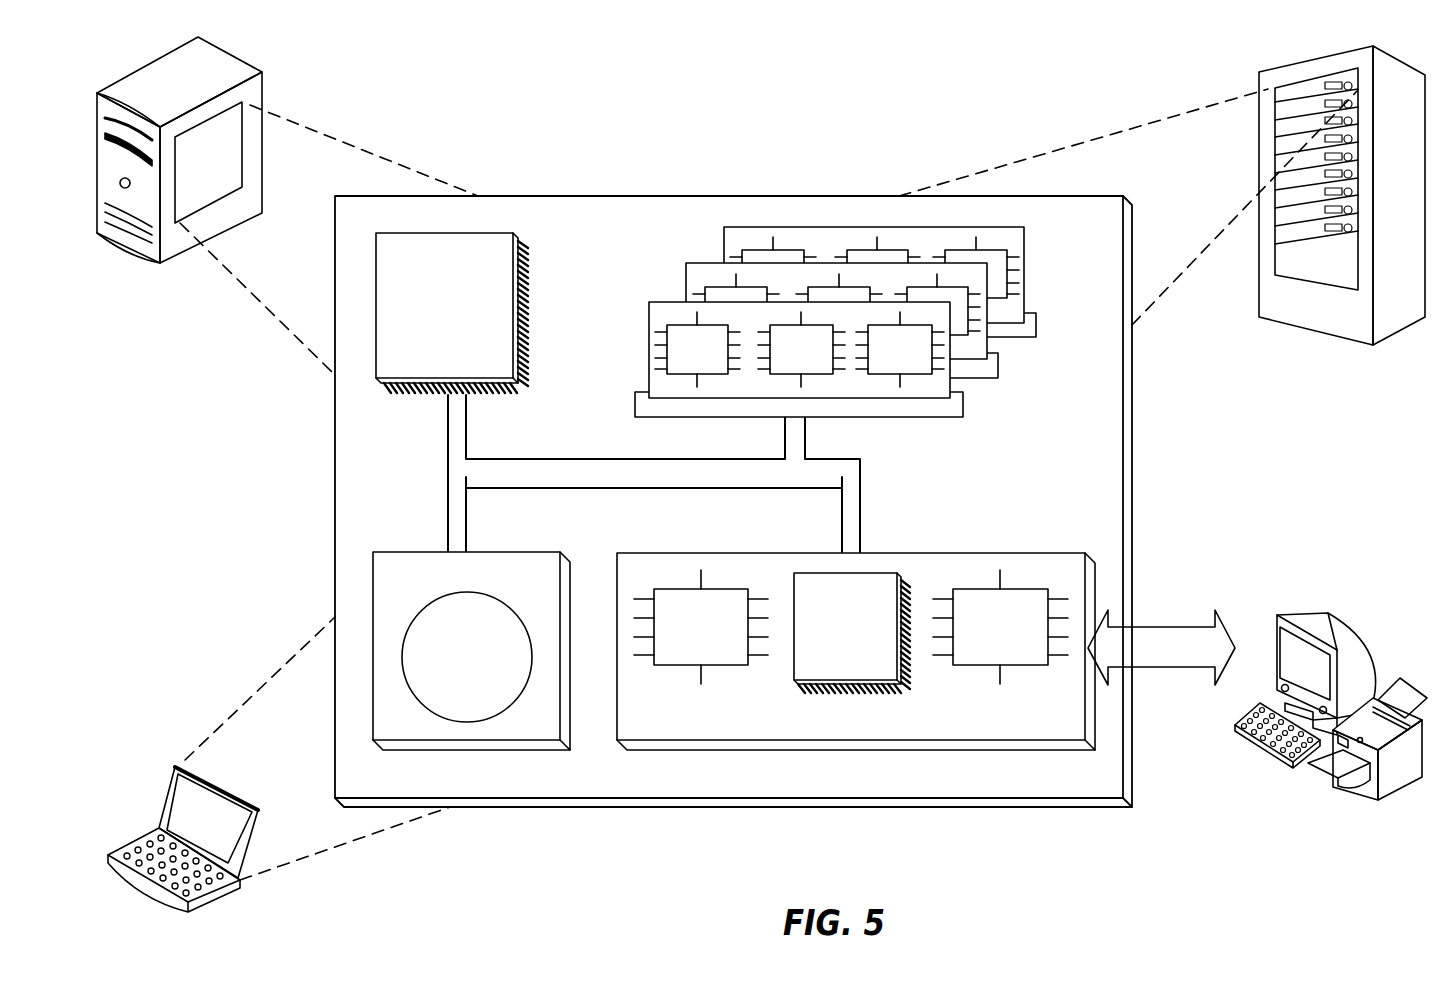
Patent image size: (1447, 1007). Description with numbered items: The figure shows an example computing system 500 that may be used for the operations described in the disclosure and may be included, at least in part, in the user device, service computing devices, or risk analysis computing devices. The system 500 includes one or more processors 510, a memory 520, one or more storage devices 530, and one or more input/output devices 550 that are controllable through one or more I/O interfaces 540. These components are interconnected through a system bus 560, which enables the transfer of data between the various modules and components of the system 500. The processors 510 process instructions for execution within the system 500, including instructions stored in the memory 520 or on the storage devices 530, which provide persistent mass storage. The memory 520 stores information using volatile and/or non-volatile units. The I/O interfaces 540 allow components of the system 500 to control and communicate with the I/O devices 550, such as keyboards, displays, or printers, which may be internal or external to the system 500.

The computing system 500 is at (544, 108).
The processor 510 is at (503, 372).
The memory 520 is at (1037, 383).
The storage device 530 is at (550, 732).
The I/O interface 540 is at (968, 730).
The I/O device 550 is at (1276, 619).
The system bus 560 is at (648, 478).